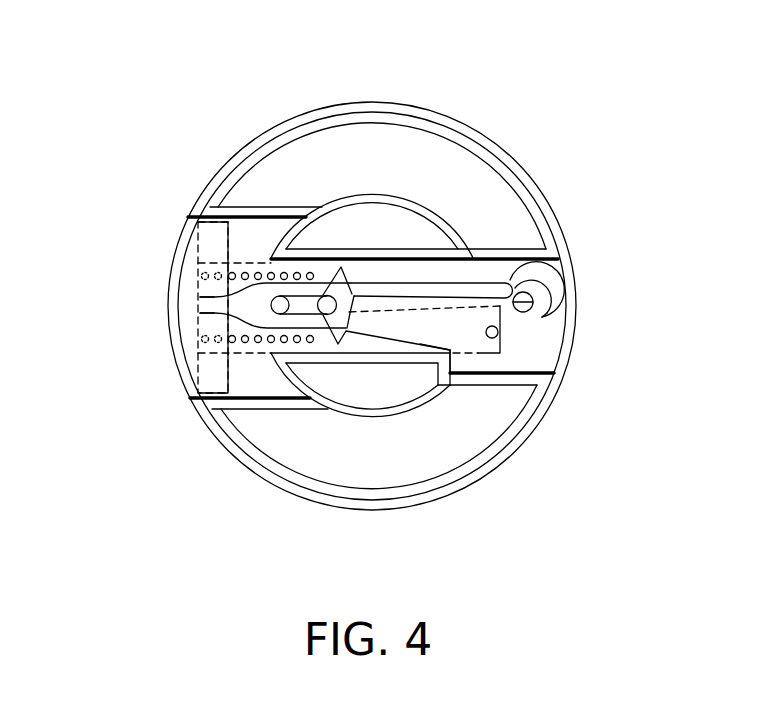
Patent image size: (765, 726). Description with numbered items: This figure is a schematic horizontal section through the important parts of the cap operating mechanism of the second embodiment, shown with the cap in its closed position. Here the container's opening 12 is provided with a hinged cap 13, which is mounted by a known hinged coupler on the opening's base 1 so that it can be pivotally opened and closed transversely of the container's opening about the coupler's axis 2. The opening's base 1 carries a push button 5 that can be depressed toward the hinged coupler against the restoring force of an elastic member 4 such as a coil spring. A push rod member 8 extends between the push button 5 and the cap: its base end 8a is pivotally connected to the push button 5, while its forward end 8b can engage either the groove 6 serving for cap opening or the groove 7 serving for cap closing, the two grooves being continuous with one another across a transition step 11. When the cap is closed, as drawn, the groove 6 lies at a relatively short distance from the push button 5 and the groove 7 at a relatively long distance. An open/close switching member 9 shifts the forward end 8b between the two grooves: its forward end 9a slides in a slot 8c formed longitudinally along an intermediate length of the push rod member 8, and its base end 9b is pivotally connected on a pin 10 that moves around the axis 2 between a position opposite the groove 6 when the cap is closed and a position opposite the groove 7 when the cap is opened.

The opening's base 1 is at (318, 492).
The axis of the hinged coupler 2 is at (544, 327).
The elastic member 4 is at (192, 395).
The push button 5 is at (183, 340).
The groove for cap opening 6 is at (556, 300).
The groove for cap closing 7 is at (552, 323).
The push rod member 8 is at (247, 303).
The base end of push rod member 8a is at (205, 313).
The forward end of push rod member 8b is at (492, 290).
The slot 8c is at (293, 308).
The open/close switching member 9 is at (383, 296).
The forward end of switching member 9a is at (326, 294).
The base end of switching member 9b is at (477, 343).
The pin 10 is at (497, 339).
The transition step 11 is at (524, 316).
The container's opening 12 is at (423, 237).
The hinged cap 13 is at (574, 238).